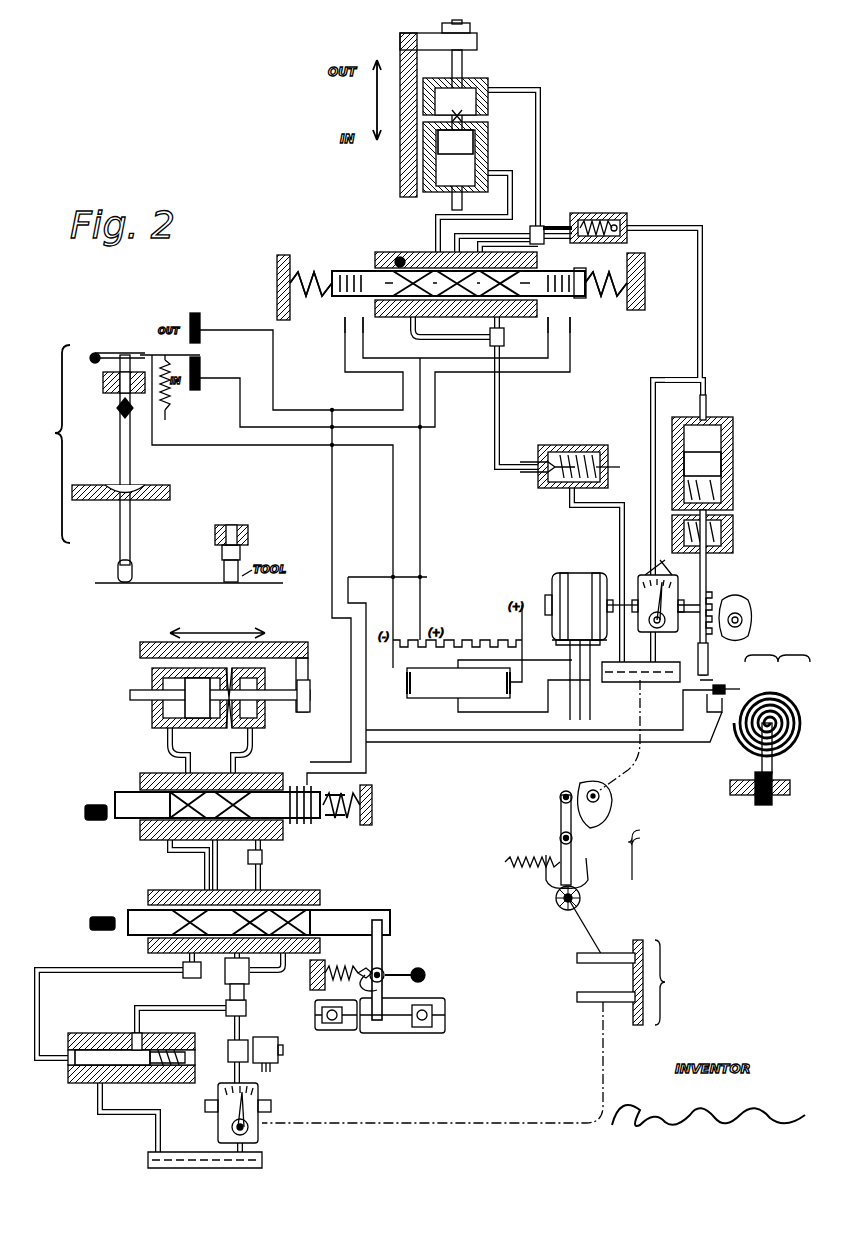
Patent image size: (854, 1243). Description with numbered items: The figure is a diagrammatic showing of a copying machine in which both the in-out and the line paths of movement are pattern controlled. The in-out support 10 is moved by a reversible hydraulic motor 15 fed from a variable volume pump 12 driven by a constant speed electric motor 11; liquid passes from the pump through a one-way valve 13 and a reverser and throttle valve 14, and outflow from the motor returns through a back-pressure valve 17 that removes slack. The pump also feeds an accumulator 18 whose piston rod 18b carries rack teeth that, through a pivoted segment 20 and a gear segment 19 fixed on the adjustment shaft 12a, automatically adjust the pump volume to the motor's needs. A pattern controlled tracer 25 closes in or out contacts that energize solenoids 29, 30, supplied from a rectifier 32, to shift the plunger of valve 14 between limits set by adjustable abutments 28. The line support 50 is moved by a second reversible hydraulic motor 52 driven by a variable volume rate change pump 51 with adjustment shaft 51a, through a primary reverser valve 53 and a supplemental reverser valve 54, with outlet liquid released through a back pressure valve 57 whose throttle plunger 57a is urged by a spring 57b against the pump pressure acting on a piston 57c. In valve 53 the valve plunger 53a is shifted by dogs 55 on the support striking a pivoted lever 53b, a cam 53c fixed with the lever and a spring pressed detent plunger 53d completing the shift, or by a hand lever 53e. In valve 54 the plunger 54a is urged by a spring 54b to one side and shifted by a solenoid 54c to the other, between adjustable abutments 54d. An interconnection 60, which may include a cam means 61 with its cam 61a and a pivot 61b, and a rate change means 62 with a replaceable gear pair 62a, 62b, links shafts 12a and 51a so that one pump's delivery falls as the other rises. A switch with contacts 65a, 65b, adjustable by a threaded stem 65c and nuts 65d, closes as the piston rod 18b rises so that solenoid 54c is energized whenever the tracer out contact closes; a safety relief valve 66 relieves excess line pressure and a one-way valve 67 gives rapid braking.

The in-out support 10 is at (400, 42).
The electric motor 11 is at (577, 580).
The variable volume pump 12 is at (640, 575).
The adjustment shaft 12a is at (660, 578).
The one-way valve 13 is at (602, 208).
The reverser and throttle valve 14 is at (400, 252).
The reversible hydraulic motor 15 is at (470, 80).
The back-pressure valve 17 is at (558, 445).
The accumulator device 18 is at (733, 452).
The piston rod 18b is at (708, 588).
The gear segment 19 is at (688, 628).
The pivoted segment 20 is at (740, 604).
The tracer device 25 is at (416, 503).
The adjustable abutments 28 is at (308, 300).
The solenoid 29 is at (350, 271).
The solenoid 30 is at (562, 271).
The rectifier 32 is at (458, 683).
The line support 50 is at (305, 660).
The variable volume rate change pump 51 is at (260, 1100).
The adjustment shaft 51a is at (250, 1130).
The reversible hydraulic motor 52 is at (268, 722).
The primary reverser valve 53 is at (292, 890).
The valve plunger 53a is at (340, 912).
The pivoted lever 53b is at (384, 950).
The cam 53c is at (370, 968).
The detent plunger 53d is at (390, 982).
The hand lever 53e is at (425, 970).
The supplemental reverser valve 54 is at (270, 773).
The plunger 54a is at (128, 792).
The spring 54b is at (348, 826).
The solenoid 54c is at (300, 826).
The adjustable abutments 54d is at (96, 822).
The dogs 55 is at (335, 1032).
The back pressure valve 57 is at (92, 1033).
The throttle plunger 57a is at (115, 1083).
The spring 57b is at (150, 1040).
The piston 57c is at (168, 1083).
The interconnection 60 is at (628, 772).
The cam means 61 is at (581, 869).
The cam 61a is at (583, 832).
The pivot 61b is at (560, 793).
The rate change means 62 is at (661, 982).
The gear 62a is at (628, 966).
The gear 62b is at (635, 1020).
The contact 65a is at (706, 710).
The contact 65b is at (729, 683).
The threaded stem 65c is at (750, 760).
The nuts 65d is at (750, 796).
The adjustable safety relief valve 66 is at (263, 1037).
The one-way valve 67 is at (246, 990).